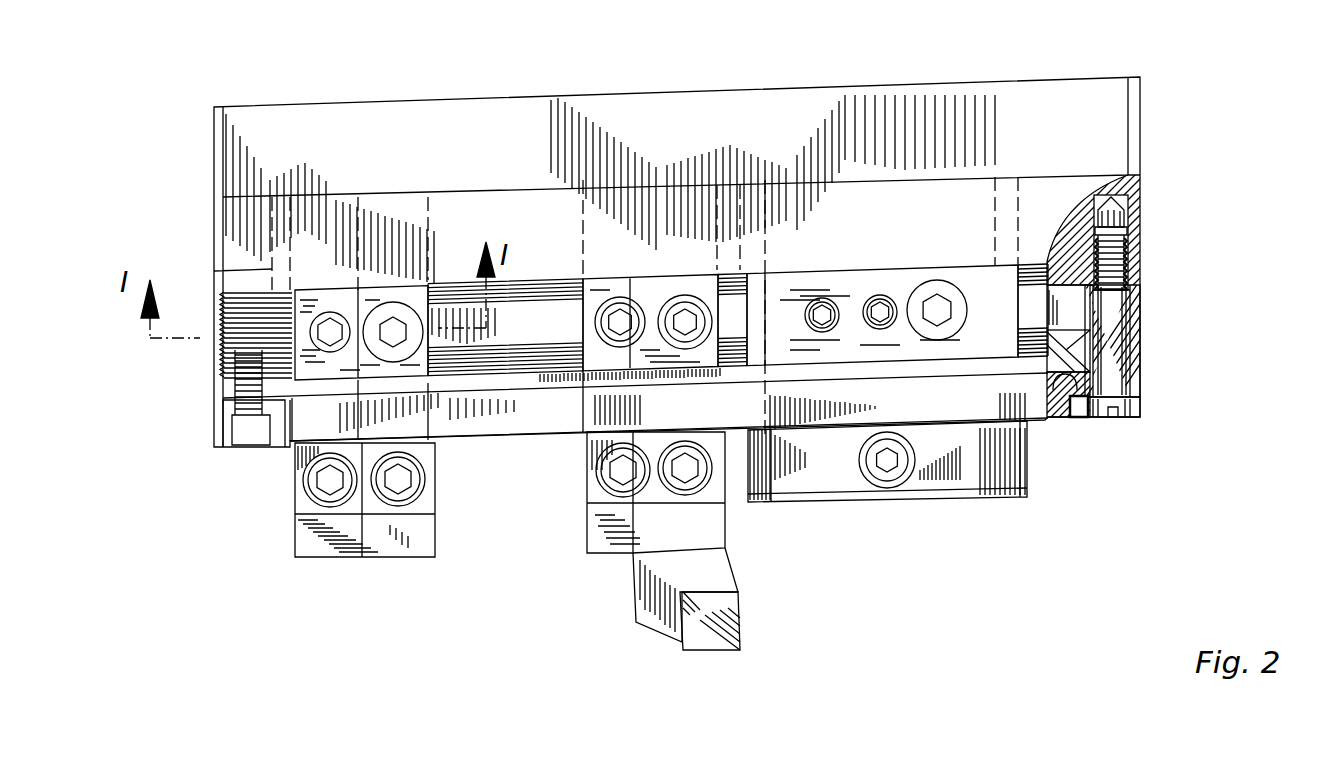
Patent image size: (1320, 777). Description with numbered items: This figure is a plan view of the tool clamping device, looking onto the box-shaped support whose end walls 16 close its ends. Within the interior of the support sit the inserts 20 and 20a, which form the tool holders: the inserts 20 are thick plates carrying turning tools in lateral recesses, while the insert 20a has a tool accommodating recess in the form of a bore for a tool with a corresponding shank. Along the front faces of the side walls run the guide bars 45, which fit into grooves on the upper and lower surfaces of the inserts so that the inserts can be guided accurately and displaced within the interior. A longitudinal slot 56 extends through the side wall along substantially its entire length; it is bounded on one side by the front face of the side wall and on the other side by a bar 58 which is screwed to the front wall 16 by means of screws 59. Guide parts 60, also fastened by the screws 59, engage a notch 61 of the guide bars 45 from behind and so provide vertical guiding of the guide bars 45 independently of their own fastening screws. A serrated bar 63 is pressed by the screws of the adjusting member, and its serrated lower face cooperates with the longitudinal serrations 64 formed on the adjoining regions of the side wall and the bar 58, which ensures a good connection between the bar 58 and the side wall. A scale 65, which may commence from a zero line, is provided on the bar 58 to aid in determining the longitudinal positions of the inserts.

The end wall 16 is at (1123, 190).
The insert 20 is at (585, 540).
The insert 20a is at (835, 505).
The guide bar 45 is at (977, 410).
The longitudinal slot 56 is at (553, 300).
The bar 58 is at (1118, 300).
The screw 59 is at (1113, 337).
The guide part 60 is at (1140, 387).
The notch 61 is at (1065, 420).
The serrated bar 63 is at (977, 280).
The longitudinal serrations 64 is at (452, 290).
The scale 65 is at (550, 420).